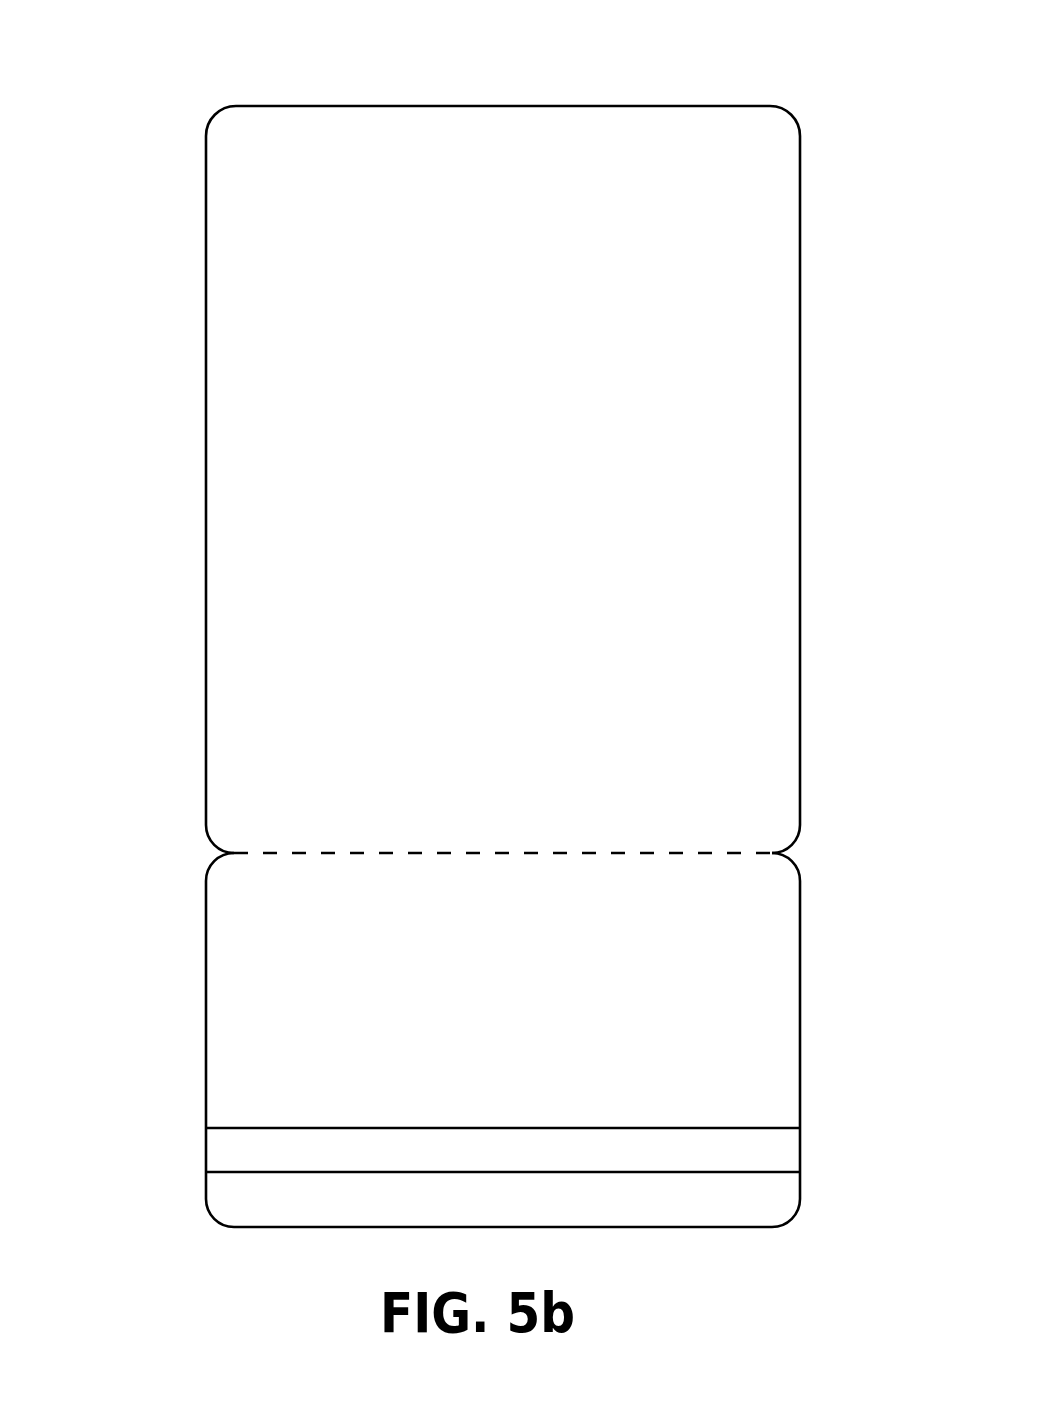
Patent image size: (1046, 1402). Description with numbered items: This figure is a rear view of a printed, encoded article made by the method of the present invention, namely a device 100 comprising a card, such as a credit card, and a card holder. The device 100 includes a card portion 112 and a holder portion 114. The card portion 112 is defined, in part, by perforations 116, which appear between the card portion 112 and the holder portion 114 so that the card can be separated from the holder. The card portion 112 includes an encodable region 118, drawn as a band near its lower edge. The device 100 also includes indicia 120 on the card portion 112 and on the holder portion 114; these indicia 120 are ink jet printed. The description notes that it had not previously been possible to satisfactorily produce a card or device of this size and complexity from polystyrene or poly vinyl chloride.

The device 100 is at (476, 613).
The card portion 112 is at (555, 1040).
The holder portion 114 is at (463, 587).
The perforations 116 is at (277, 852).
The encodable region 118 is at (782, 1146).
The indicia 120 is at (295, 317).